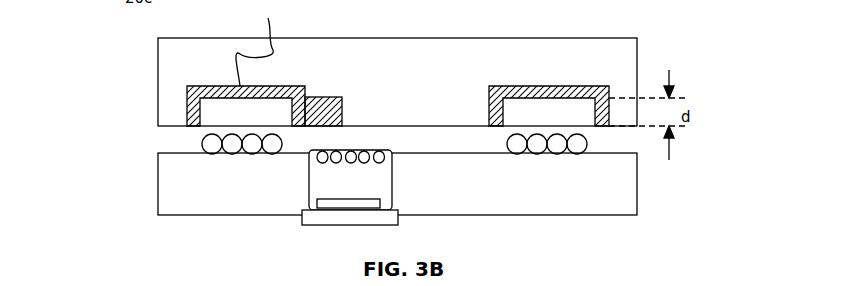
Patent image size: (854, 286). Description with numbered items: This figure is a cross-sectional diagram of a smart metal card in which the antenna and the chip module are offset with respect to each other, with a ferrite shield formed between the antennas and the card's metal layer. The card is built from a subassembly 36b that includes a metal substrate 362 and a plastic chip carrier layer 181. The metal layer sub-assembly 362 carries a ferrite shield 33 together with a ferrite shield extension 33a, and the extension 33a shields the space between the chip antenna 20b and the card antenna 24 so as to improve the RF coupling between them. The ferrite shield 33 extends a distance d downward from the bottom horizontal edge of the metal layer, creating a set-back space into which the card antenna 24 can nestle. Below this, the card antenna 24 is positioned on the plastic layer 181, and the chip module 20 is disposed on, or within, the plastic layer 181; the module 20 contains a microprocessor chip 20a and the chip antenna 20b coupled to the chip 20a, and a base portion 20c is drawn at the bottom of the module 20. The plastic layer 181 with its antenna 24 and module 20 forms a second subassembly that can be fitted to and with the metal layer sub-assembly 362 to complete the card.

The subassembly 36b is at (636, 29).
The metal layer sub-assembly 362 is at (158, 83).
The ferrite shield 33 is at (273, 87).
The ferrite shield extension 33a is at (320, 97).
The plastic chip carrier layer 181 is at (637, 210).
The card antenna 24 is at (204, 142).
The chip module 20 is at (393, 185).
The microprocessor chip 20a is at (345, 199).
The chip antenna 20b is at (320, 170).
The chip base plate 20c is at (340, 224).